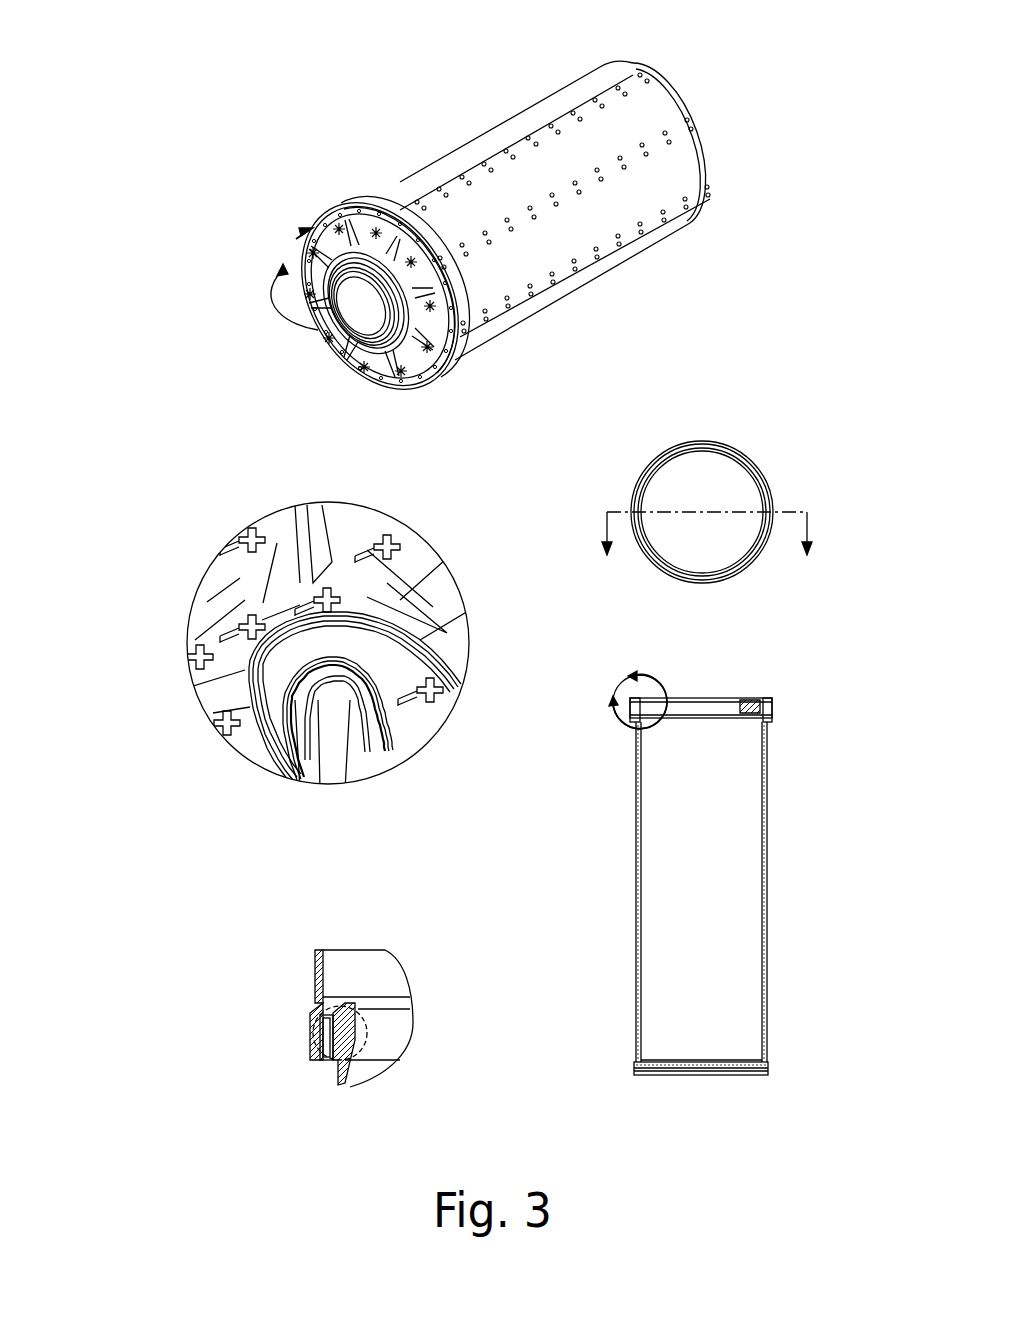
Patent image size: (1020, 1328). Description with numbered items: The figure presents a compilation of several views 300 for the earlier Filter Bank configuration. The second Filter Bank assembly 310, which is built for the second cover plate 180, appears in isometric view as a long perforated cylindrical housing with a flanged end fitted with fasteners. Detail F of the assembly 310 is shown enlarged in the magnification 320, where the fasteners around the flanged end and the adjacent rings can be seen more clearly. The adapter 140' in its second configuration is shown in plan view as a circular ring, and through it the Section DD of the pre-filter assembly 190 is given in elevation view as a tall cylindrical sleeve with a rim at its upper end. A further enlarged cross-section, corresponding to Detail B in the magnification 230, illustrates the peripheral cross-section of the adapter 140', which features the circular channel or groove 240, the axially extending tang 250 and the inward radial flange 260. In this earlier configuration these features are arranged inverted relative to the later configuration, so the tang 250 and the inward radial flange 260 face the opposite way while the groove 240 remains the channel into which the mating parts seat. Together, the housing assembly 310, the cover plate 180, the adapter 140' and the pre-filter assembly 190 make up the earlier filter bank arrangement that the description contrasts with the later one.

The views 300 is at (158, 115).
The second Filter Bank assembly 310 is at (589, 22).
The second cover plate 180 is at (437, 368).
The pre-filter assembly 190 is at (340, 343).
The adapter 140' is at (710, 488).
The magnification 320 is at (415, 562).
The axially extending tang 250 is at (400, 693).
The inward radial flange 260 is at (365, 1010).
The magnification 230 is at (407, 1042).
The groove 240 is at (323, 1062).